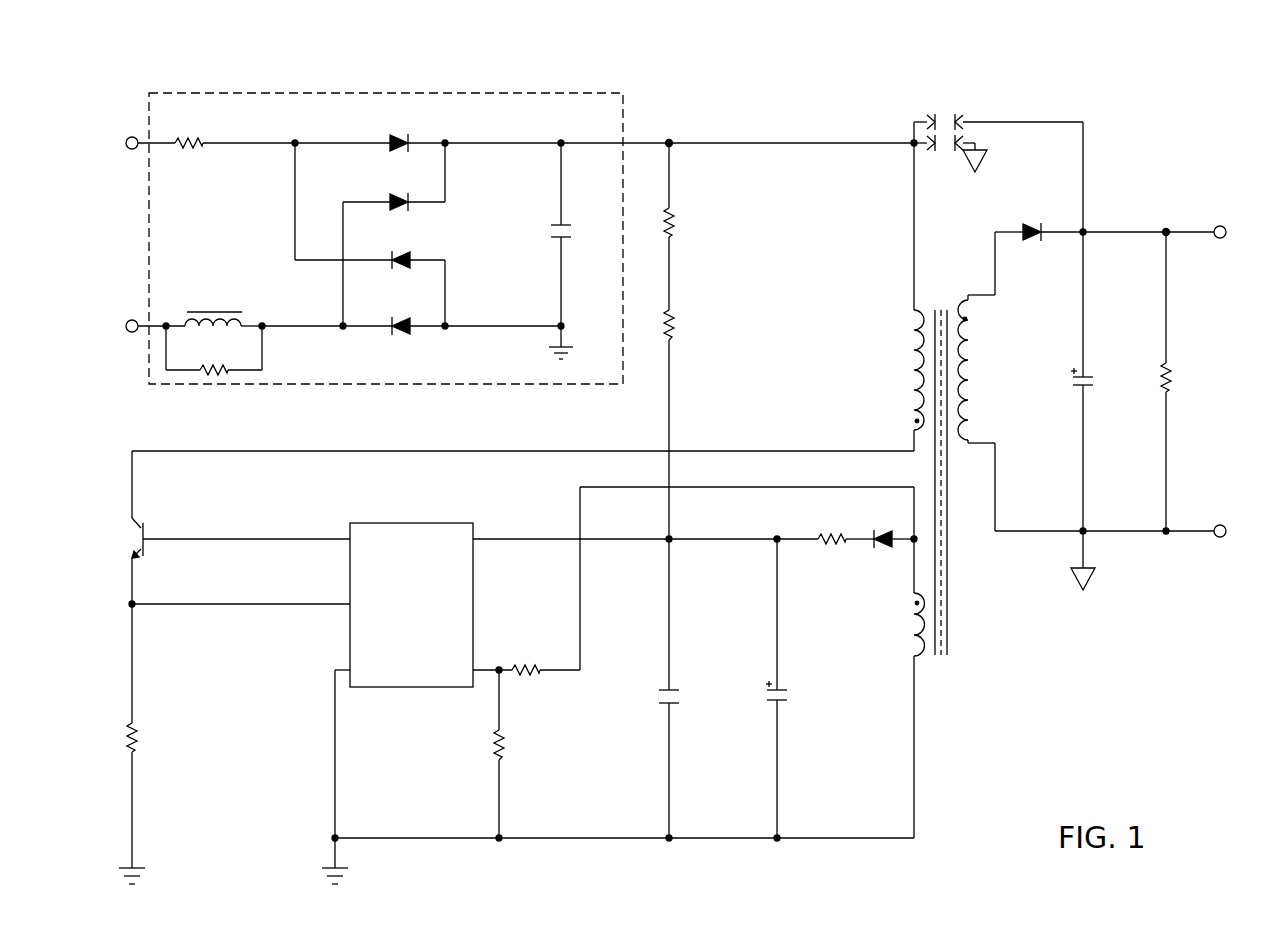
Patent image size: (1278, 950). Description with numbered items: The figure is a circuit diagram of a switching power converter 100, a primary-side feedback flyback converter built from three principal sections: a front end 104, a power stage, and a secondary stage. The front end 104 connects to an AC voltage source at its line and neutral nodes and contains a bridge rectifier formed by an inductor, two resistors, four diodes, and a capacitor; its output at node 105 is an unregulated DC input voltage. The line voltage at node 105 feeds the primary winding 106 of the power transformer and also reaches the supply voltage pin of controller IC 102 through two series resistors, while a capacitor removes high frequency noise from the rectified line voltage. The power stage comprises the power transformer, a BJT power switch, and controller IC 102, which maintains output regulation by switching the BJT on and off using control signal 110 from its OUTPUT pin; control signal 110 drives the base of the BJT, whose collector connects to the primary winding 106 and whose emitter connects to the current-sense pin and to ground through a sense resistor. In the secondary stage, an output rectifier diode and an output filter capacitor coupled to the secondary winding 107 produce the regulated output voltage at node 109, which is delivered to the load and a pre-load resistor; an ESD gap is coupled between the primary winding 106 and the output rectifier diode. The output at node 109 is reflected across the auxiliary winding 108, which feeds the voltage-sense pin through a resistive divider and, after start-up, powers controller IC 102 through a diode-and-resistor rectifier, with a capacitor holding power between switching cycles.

The switching power converter 100 is at (1019, 673).
The controller IC 102 is at (375, 523).
The front end 104 is at (623, 113).
The node 105 is at (672, 147).
The primary winding 106 is at (917, 323).
The secondary winding 107 is at (963, 341).
The auxiliary winding 108 is at (915, 625).
The node 109 is at (1166, 228).
The control signal 110 is at (227, 535).